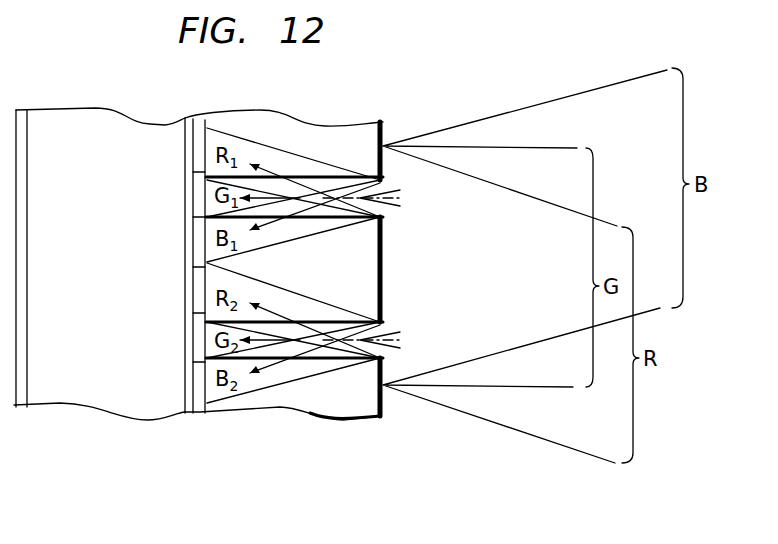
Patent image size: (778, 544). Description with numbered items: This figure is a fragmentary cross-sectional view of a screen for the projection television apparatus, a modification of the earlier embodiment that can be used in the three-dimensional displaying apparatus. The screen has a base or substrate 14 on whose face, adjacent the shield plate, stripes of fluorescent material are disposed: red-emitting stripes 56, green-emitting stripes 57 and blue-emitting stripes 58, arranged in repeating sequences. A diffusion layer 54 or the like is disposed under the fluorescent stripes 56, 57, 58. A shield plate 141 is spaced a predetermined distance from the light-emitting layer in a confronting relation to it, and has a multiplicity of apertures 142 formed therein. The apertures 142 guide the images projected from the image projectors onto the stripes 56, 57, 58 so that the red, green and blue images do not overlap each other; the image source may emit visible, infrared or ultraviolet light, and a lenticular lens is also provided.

The base or substrate 14 is at (20, 404).
The diffusion layer 54 is at (188, 418).
The red fluorescent stripe 56 is at (197, 152).
The green fluorescent stripe 57 is at (197, 195).
The blue fluorescent stripe 58 is at (197, 240).
The shield plate 141 is at (382, 395).
The apertures 142 is at (387, 212).